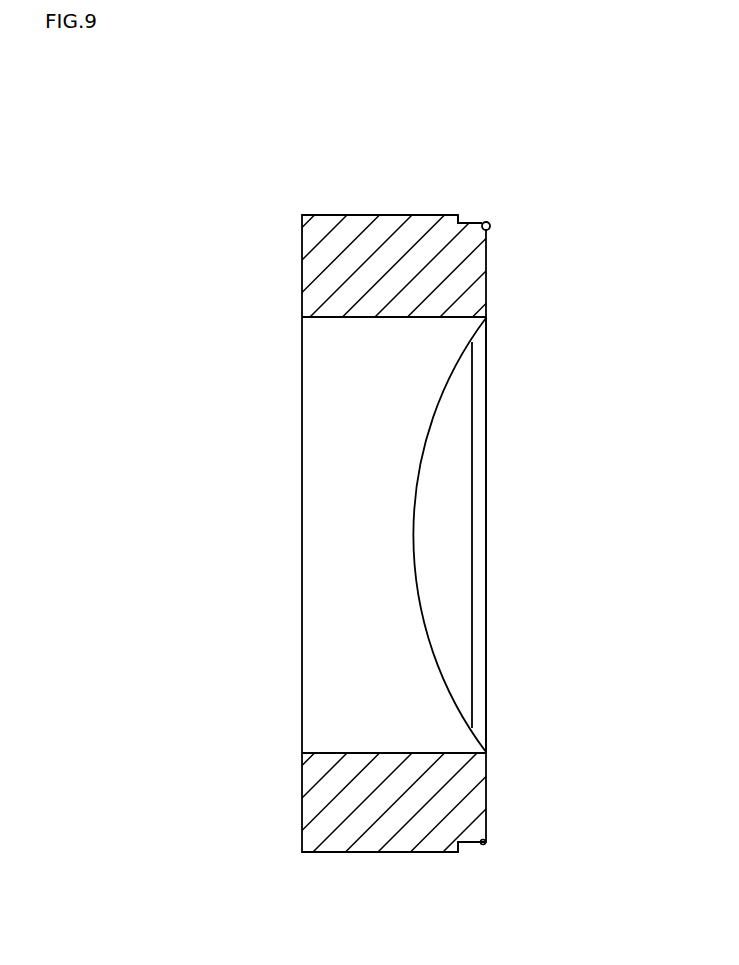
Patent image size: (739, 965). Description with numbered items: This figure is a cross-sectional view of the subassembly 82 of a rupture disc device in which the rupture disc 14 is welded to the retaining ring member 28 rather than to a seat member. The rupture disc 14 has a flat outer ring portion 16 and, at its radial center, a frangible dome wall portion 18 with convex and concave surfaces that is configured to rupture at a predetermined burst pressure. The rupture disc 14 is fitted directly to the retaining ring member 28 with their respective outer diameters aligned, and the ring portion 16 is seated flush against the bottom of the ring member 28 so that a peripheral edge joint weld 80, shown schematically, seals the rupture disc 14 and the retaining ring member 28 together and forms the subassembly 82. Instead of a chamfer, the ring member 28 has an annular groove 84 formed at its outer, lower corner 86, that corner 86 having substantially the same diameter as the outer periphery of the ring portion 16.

The subassembly 82 is at (622, 103).
The retaining ring member 28 is at (338, 172).
The annular groove 84 is at (472, 223).
The peripheral edge joint weld 80 is at (490, 225).
The outer, lower corner 86 is at (488, 845).
The outer ring portion 16 is at (487, 783).
The rupture disc 14 is at (410, 379).
The frangible dome wall portion 18 is at (423, 617).